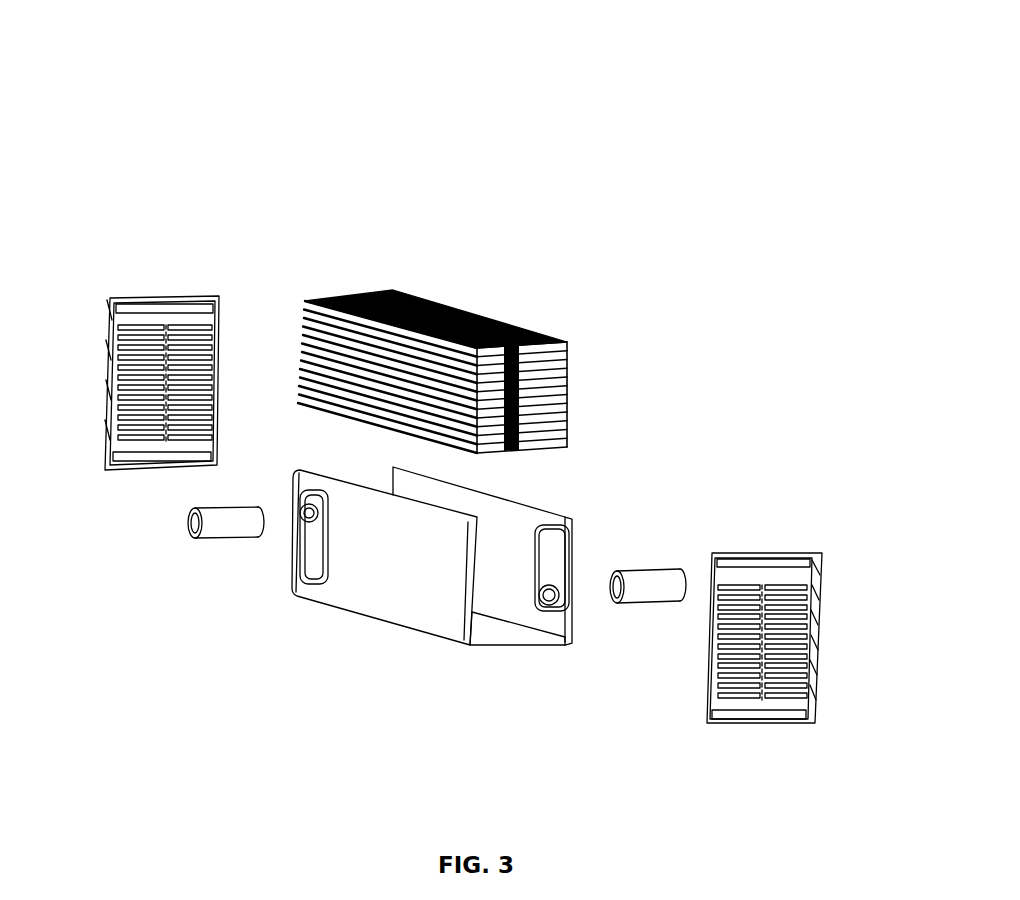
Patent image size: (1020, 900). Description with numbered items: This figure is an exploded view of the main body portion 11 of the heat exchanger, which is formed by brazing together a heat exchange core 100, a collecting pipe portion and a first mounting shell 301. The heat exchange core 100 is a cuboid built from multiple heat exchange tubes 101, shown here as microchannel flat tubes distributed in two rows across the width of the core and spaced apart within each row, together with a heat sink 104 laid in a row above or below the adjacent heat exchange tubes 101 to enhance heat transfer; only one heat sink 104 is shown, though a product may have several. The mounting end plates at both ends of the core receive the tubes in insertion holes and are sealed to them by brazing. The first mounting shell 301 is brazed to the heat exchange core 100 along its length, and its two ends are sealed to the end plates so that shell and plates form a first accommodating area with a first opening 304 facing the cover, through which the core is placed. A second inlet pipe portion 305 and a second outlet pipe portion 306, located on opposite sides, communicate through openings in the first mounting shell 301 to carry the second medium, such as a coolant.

The main body portion 11 is at (347, 130).
The heat exchange core 100 is at (583, 352).
The heat exchange tube 101 is at (308, 338).
The heat sink 104 is at (480, 313).
The first mounting shell 301 is at (405, 592).
The first opening 304 is at (505, 503).
The second inlet pipe portion 305 is at (230, 523).
The second outlet pipe portion 306 is at (658, 580).